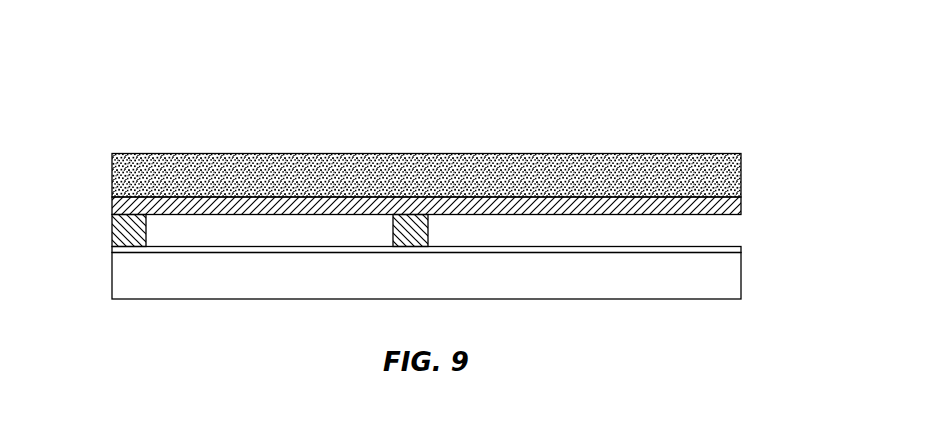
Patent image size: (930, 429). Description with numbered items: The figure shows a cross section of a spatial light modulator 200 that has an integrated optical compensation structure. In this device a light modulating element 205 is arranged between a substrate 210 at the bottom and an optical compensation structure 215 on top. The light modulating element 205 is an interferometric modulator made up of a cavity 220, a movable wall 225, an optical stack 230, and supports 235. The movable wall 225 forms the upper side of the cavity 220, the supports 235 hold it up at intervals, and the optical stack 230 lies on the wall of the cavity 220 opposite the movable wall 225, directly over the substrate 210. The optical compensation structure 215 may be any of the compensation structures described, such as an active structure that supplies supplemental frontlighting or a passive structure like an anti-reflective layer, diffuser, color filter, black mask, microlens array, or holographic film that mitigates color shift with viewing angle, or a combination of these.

The spatial light modulator 200 is at (144, 100).
The light modulating element 205 is at (105, 197).
The substrate 210 is at (741, 287).
The optical compensation structure 215 is at (741, 164).
The cavity 220 is at (728, 234).
The movable wall 225 is at (741, 200).
The optical stack 230 is at (741, 253).
The supports 235 is at (133, 240).